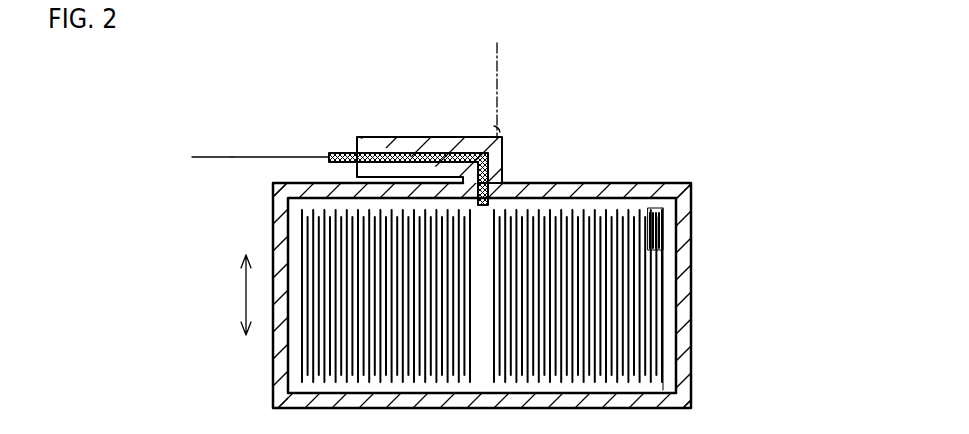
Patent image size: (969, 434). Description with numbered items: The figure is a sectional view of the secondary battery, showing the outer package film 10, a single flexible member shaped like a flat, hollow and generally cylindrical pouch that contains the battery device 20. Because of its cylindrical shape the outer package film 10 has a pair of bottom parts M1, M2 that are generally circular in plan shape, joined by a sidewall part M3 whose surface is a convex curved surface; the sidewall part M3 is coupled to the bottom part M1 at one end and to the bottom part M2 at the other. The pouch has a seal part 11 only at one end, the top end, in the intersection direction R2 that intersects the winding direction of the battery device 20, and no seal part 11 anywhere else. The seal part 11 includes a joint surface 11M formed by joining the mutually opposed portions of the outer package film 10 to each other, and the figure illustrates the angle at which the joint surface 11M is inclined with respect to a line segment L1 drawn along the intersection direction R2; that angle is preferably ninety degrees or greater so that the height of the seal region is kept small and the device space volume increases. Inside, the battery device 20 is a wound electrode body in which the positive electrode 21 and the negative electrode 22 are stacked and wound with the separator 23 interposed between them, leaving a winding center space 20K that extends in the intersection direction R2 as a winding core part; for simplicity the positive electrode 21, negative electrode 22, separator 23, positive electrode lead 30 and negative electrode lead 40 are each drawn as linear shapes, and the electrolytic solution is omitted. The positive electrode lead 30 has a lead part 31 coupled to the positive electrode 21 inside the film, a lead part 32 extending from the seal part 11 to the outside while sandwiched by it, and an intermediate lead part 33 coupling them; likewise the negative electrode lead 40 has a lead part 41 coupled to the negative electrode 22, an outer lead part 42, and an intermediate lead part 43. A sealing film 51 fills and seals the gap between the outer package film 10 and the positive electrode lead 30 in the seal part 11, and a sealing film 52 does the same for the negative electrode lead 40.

The outer package film 10 is at (485, 265).
The seal part 11 is at (446, 125).
The joint surface 11M is at (425, 125).
The battery device 20 is at (472, 238).
The winding center space 20K is at (341, 296).
The positive electrode 21 is at (633, 296).
The negative electrode 22 is at (636, 296).
The separator 23 is at (532, 296).
The positive electrode lead 30 is at (272, 110).
The negative electrode lead 40 is at (272, 110).
The lead part 31 is at (706, 229).
The lead part 41 is at (705, 238).
The lead part 32 is at (215, 198).
The lead part 42 is at (215, 198).
The lead part 33 is at (633, 238).
The lead part 43 is at (633, 238).
The sealing film 51 is at (400, 134).
The sealing film 52 is at (400, 134).
The line segment L1 is at (521, 90).
The bottom part M1 is at (485, 260).
The bottom part M2 is at (485, 300).
The sidewall part M3 is at (485, 291).
The intersection direction R2 is at (219, 295).